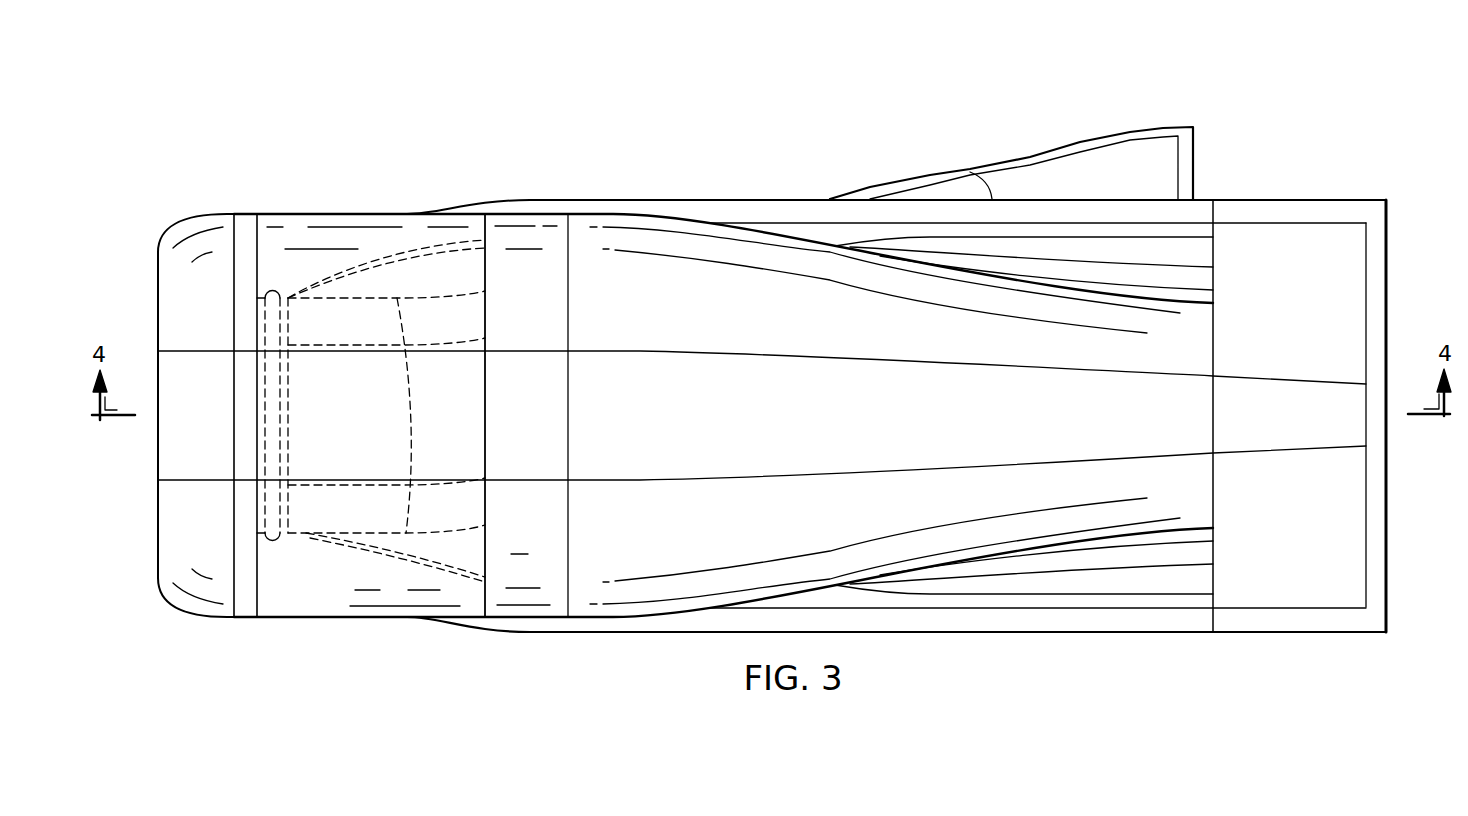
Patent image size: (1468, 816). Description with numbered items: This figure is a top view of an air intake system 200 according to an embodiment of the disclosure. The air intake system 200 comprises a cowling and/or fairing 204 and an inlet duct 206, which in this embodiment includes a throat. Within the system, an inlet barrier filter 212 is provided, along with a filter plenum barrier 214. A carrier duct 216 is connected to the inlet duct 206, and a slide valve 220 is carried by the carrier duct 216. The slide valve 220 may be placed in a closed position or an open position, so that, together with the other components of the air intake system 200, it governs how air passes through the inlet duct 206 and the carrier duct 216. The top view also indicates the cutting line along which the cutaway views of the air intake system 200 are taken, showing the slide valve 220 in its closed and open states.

The air intake system 200 is at (955, 71).
The cowling and/or fairing 204 is at (541, 228).
The inlet duct 206 is at (168, 283).
The inlet barrier filter 212 is at (298, 224).
The filter plenum barrier 214 is at (407, 552).
The carrier duct 216 is at (347, 517).
The slide valve 220 is at (462, 307).